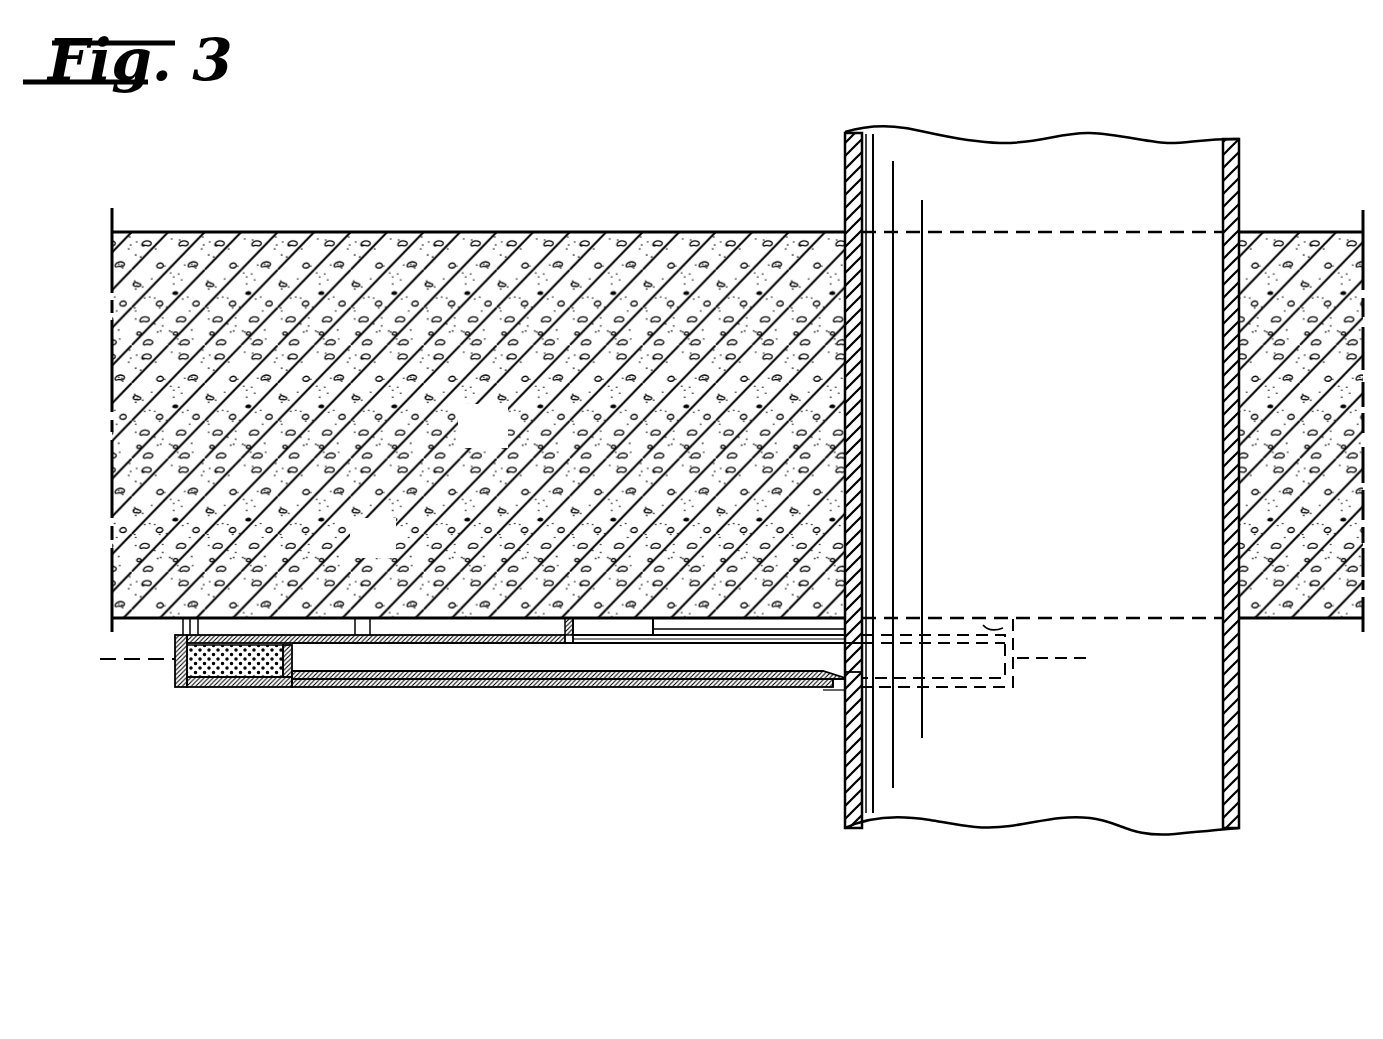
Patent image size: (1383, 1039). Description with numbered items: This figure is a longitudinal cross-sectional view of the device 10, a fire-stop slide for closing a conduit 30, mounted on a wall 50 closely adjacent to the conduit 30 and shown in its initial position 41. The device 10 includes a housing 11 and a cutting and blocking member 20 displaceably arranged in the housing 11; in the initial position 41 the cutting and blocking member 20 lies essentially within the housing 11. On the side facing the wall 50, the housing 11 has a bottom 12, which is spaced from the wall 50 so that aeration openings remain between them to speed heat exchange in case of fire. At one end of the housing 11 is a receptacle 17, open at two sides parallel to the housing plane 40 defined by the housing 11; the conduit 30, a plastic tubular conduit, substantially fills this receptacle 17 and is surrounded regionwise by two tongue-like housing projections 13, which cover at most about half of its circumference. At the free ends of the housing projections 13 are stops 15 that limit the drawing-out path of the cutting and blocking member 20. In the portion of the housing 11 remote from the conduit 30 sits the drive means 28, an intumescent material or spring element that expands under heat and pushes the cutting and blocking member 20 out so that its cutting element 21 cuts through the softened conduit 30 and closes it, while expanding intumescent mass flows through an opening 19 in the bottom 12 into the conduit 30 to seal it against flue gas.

The device 10 is at (245, 798).
The housing 11 is at (490, 690).
The bottom 12 is at (352, 632).
The housing projections 13 is at (993, 682).
The stops 15 is at (988, 623).
The receptacle 17 is at (940, 662).
The opening 19 is at (608, 638).
The cutting and blocking member 20 is at (722, 686).
The cutting element 21 is at (833, 688).
The drive means 28 is at (237, 668).
The conduit 30 is at (848, 172).
The housing plane 40 is at (1072, 660).
The initial position 41 is at (812, 703).
The wall 50 is at (500, 444).